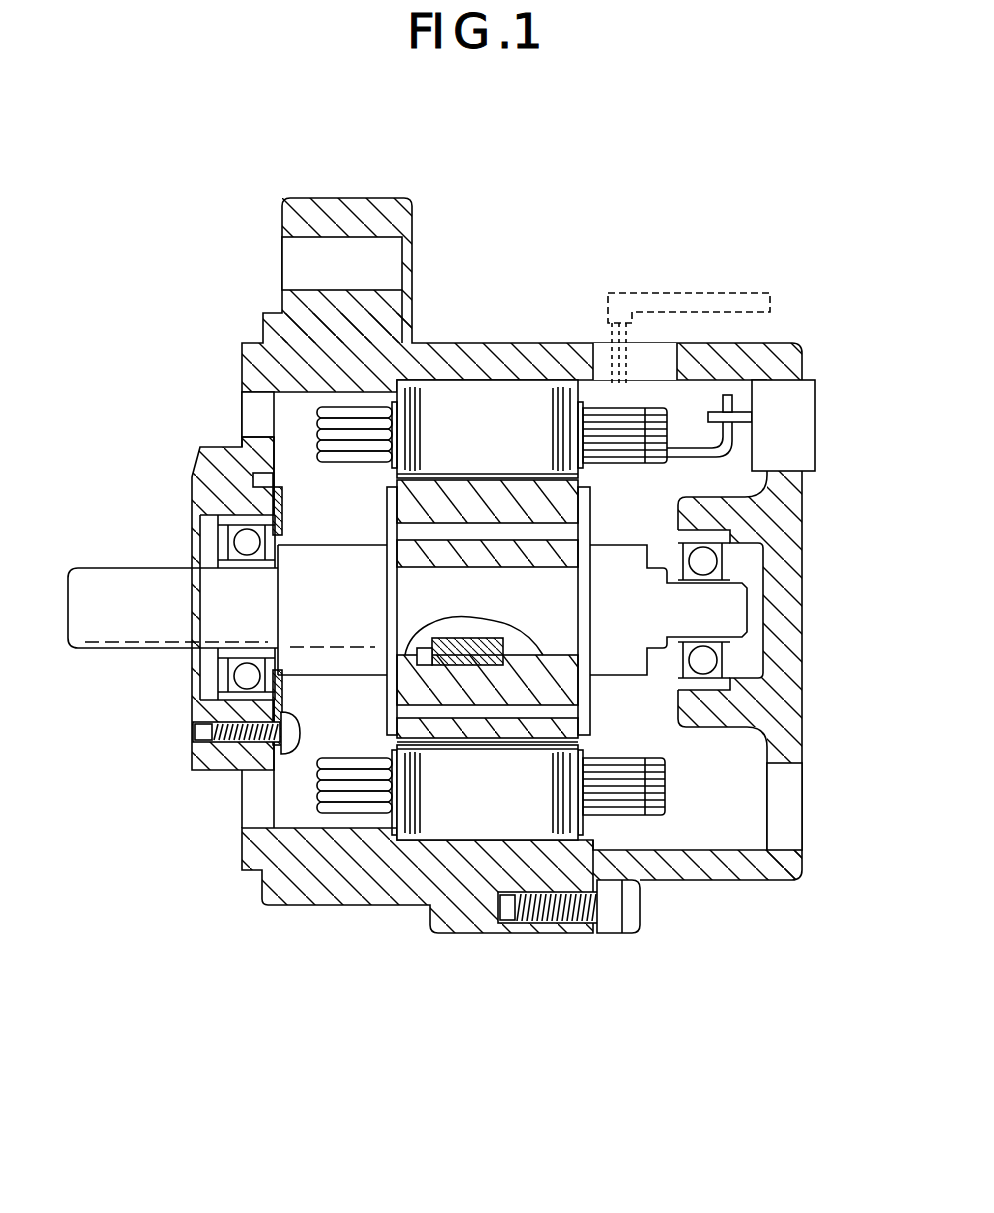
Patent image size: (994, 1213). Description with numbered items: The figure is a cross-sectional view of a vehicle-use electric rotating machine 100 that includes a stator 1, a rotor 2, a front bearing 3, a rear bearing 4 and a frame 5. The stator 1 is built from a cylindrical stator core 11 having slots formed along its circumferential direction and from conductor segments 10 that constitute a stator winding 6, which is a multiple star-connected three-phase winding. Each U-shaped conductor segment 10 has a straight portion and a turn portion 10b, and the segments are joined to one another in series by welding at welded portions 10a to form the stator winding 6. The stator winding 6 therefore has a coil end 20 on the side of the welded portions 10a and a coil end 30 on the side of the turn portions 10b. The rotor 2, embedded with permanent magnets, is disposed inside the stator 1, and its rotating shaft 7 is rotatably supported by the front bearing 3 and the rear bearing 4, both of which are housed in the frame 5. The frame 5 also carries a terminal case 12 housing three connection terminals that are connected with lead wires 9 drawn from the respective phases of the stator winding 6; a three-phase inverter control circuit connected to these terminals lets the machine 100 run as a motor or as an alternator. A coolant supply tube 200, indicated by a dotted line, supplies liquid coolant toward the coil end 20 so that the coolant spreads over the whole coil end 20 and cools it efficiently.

The electric rotating machine 100 is at (712, 158).
The coolant supply tube 200 is at (633, 293).
The stator 1 is at (458, 812).
The rotor 2 is at (602, 711).
The front bearing 3 is at (238, 517).
The rear bearing 4 is at (722, 536).
The frame 5 is at (313, 893).
The stator winding 6 is at (642, 408).
The rotating shaft 7 is at (110, 630).
The lead wire 9 is at (722, 447).
The conductor segment 10 is at (655, 400).
The welded portion 10a is at (665, 788).
The turn portion 10b is at (317, 792).
The stator core 11 is at (490, 392).
The terminal case 12 is at (815, 405).
The coil end 20 is at (648, 818).
The coil end 30 is at (355, 817).